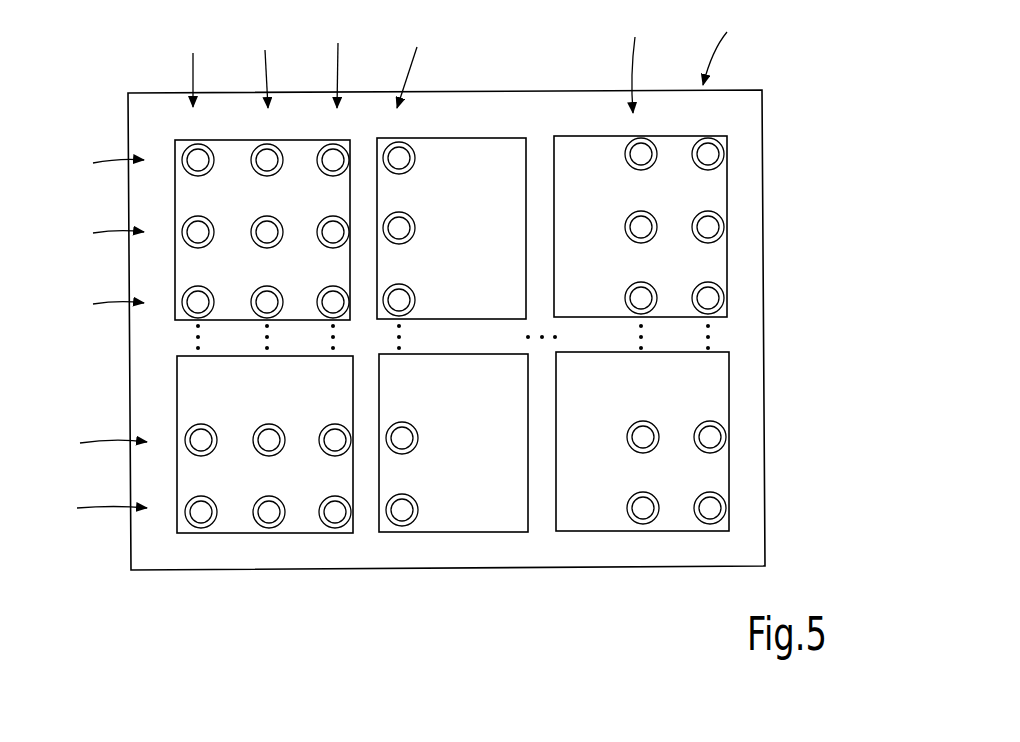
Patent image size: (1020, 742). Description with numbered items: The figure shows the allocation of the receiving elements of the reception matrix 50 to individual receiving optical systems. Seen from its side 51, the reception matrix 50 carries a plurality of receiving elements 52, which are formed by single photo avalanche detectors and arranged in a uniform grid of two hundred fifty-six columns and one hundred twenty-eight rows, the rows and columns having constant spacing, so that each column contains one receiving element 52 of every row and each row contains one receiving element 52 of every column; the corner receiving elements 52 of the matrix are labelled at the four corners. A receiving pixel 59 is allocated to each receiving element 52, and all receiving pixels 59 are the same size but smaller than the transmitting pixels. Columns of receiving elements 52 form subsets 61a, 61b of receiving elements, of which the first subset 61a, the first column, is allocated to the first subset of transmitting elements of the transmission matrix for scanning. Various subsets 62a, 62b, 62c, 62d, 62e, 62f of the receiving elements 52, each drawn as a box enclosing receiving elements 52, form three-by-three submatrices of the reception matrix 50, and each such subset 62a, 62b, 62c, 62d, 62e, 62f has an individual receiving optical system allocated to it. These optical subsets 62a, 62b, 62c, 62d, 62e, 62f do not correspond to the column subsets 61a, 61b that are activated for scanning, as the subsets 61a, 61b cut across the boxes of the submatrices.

The reception matrix 50 is at (778, 167).
The side of the reception matrix 51 is at (740, 123).
The receiving element 52 is at (197, 158).
The receiving pixel 59 is at (403, 163).
The first subset of receiving elements 61a is at (177, 122).
The second subset of receiving elements 61b is at (253, 127).
The subset of receiving elements 62a is at (293, 276).
The subset of receiving elements 62b is at (485, 274).
The subset of receiving elements 62c is at (614, 273).
The subset of receiving elements 62d is at (293, 492).
The subset of receiving elements 62e is at (488, 493).
The subset of receiving elements 62f is at (608, 492).